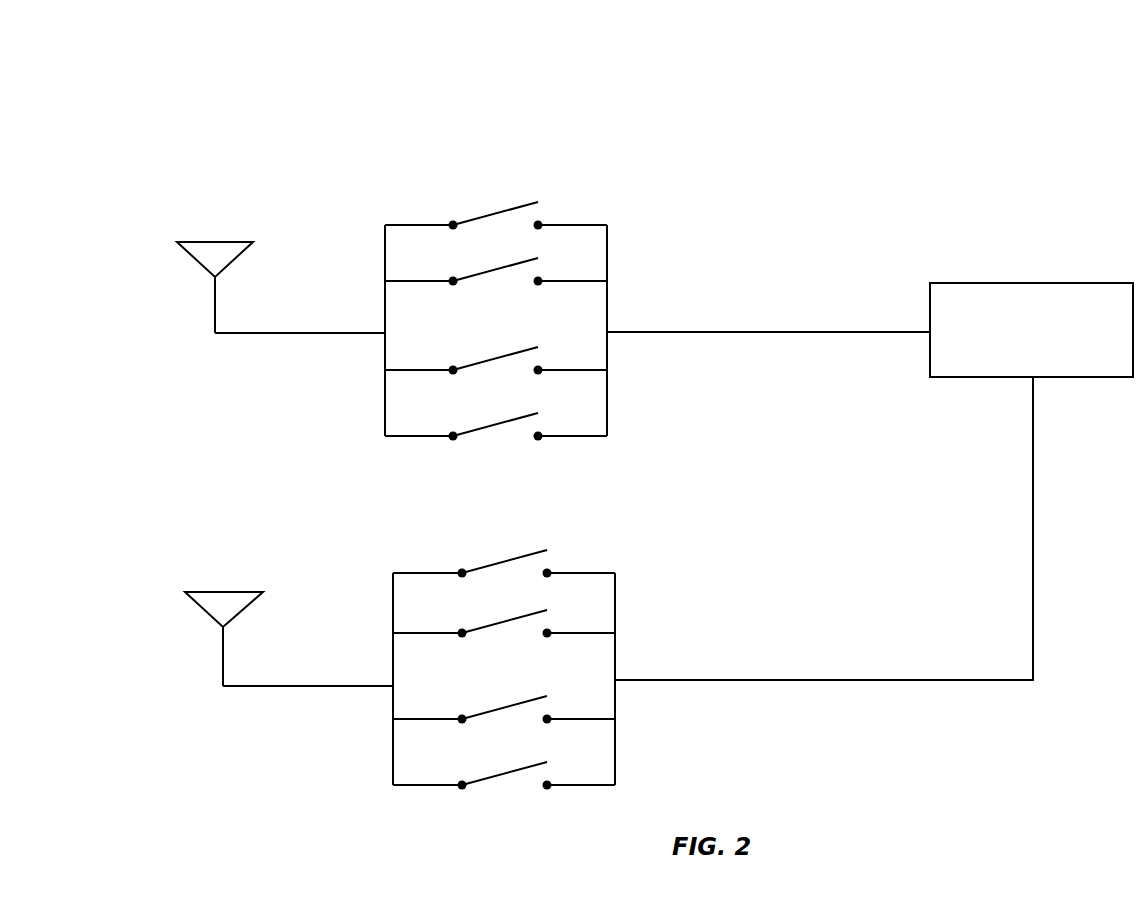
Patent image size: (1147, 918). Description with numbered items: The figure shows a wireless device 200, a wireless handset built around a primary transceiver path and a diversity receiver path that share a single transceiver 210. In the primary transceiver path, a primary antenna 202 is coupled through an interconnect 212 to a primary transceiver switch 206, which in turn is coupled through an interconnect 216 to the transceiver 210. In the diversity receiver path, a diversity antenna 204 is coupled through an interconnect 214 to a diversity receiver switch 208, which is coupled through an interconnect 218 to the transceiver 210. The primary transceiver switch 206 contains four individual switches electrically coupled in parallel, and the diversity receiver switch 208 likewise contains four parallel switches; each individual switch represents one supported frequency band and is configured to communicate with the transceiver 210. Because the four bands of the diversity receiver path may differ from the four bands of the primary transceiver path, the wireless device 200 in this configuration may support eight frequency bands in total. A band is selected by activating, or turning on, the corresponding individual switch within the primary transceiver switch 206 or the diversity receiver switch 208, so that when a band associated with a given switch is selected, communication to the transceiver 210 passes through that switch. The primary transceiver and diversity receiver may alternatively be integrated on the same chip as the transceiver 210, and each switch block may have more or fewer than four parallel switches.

The wireless device 200 is at (548, 66).
The primary antenna 202 is at (176, 256).
The diversity antenna 204 is at (186, 605).
The primary transceiver switch 206 is at (461, 174).
The diversity receiver switch 208 is at (456, 527).
The transceiver 210 is at (1031, 330).
The interconnect 212 is at (279, 344).
The interconnect 214 is at (292, 694).
The interconnect 216 is at (735, 339).
The interconnect 218 is at (770, 689).